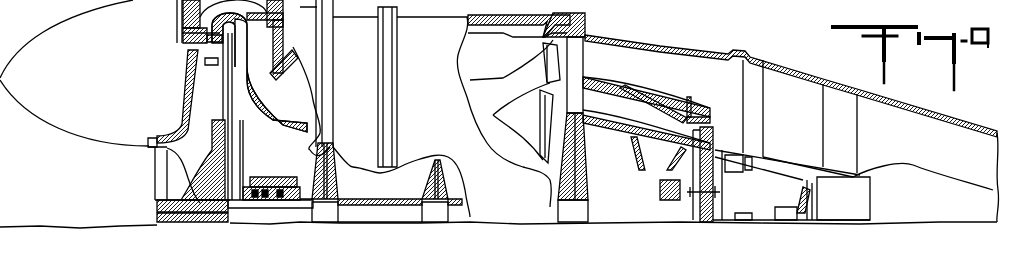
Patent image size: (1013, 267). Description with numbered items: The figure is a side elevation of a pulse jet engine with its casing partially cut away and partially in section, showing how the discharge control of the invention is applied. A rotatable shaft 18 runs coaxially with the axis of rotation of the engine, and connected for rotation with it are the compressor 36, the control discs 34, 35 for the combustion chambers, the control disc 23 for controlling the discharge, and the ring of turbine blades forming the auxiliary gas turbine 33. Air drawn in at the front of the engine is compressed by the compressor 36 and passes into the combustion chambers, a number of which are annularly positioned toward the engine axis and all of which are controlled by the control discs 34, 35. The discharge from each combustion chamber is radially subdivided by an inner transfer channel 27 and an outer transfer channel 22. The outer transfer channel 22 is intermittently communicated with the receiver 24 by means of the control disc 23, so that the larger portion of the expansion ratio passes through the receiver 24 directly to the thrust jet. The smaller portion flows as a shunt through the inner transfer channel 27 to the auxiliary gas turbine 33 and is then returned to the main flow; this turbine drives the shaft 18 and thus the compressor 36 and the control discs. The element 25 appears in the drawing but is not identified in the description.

The rotatable shaft 18 is at (194, 226).
The outer transfer channel 22 is at (534, 85).
The control disc 23 is at (581, 153).
The receiver 24 is at (681, 80).
The frame struts 25 is at (690, 122).
The inner transfer channel 27 is at (534, 120).
The auxiliary gas turbine 33 is at (707, 140).
The control disc 34 is at (328, 182).
The control disc 35 is at (448, 187).
The compressor 36 is at (180, 170).